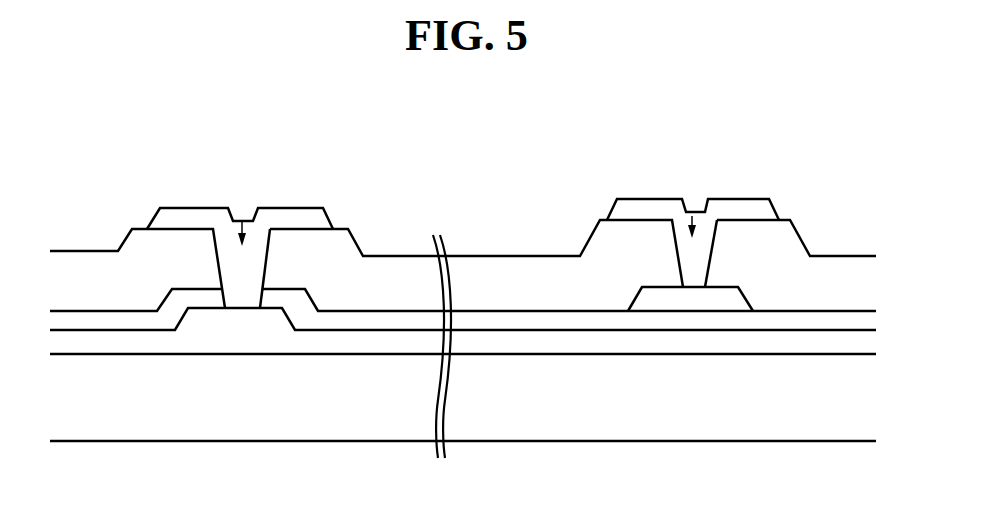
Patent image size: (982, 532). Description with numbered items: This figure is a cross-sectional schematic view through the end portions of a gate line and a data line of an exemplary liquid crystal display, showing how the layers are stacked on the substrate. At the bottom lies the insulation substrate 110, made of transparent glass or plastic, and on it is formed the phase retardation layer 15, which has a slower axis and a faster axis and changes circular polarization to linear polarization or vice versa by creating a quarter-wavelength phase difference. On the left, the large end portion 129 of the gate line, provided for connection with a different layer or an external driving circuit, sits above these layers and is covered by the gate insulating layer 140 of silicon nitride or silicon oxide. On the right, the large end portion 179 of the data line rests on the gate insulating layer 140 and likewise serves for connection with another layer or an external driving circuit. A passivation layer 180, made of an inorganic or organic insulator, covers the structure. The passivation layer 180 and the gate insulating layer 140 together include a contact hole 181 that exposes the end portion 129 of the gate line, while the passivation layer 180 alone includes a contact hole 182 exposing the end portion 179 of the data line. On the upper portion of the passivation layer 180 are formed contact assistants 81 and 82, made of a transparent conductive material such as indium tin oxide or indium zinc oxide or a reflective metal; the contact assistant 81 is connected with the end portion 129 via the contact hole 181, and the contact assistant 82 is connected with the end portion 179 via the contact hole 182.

The phase retardation layer 15 is at (98, 345).
The insulation substrate 110 is at (168, 430).
The large end portion of the gate line 129 is at (233, 322).
The gate insulating layer 140 is at (322, 320).
The passivation layer 180 is at (535, 290).
The large end portion of the data line 179 is at (668, 303).
The contact assistant 81 is at (300, 207).
The contact assistant 82 is at (750, 208).
The contact hole 181 is at (244, 212).
The contact hole 182 is at (694, 205).